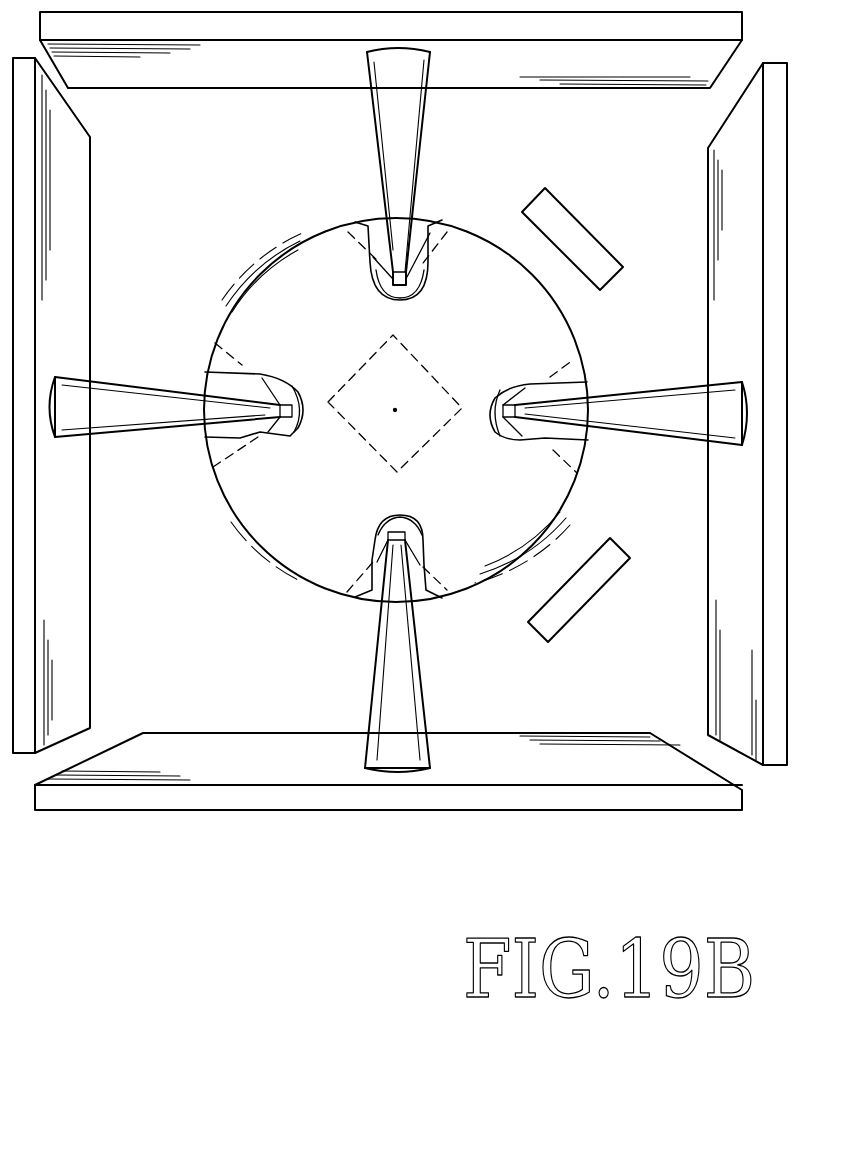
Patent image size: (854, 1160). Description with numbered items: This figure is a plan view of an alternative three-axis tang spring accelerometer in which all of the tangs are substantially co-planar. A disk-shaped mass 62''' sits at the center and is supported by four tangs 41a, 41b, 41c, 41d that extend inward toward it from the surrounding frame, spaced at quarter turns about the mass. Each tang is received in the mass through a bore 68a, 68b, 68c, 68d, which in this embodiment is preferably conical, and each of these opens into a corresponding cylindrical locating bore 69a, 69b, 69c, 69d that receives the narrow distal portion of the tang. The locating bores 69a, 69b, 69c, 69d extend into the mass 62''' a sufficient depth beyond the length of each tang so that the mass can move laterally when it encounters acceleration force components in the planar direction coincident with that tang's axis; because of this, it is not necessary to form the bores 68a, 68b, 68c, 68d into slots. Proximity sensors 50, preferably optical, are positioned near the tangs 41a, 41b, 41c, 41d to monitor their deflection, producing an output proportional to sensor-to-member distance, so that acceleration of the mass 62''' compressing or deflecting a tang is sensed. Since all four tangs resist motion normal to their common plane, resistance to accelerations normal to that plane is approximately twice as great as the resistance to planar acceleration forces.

The tang 41a is at (130, 415).
The tang 41b is at (380, 112).
The tang 41c is at (650, 390).
The tang 41d is at (415, 700).
The proximity sensor 50 is at (590, 228).
The mass 62''' is at (371, 410).
The bore 68a is at (225, 385).
The bore 68b is at (430, 232).
The bore 68c is at (585, 455).
The bore 68d is at (420, 600).
The locating bore 69a is at (302, 435).
The locating bore 69b is at (422, 286).
The locating bore 69c is at (496, 384).
The locating bore 69d is at (392, 522).